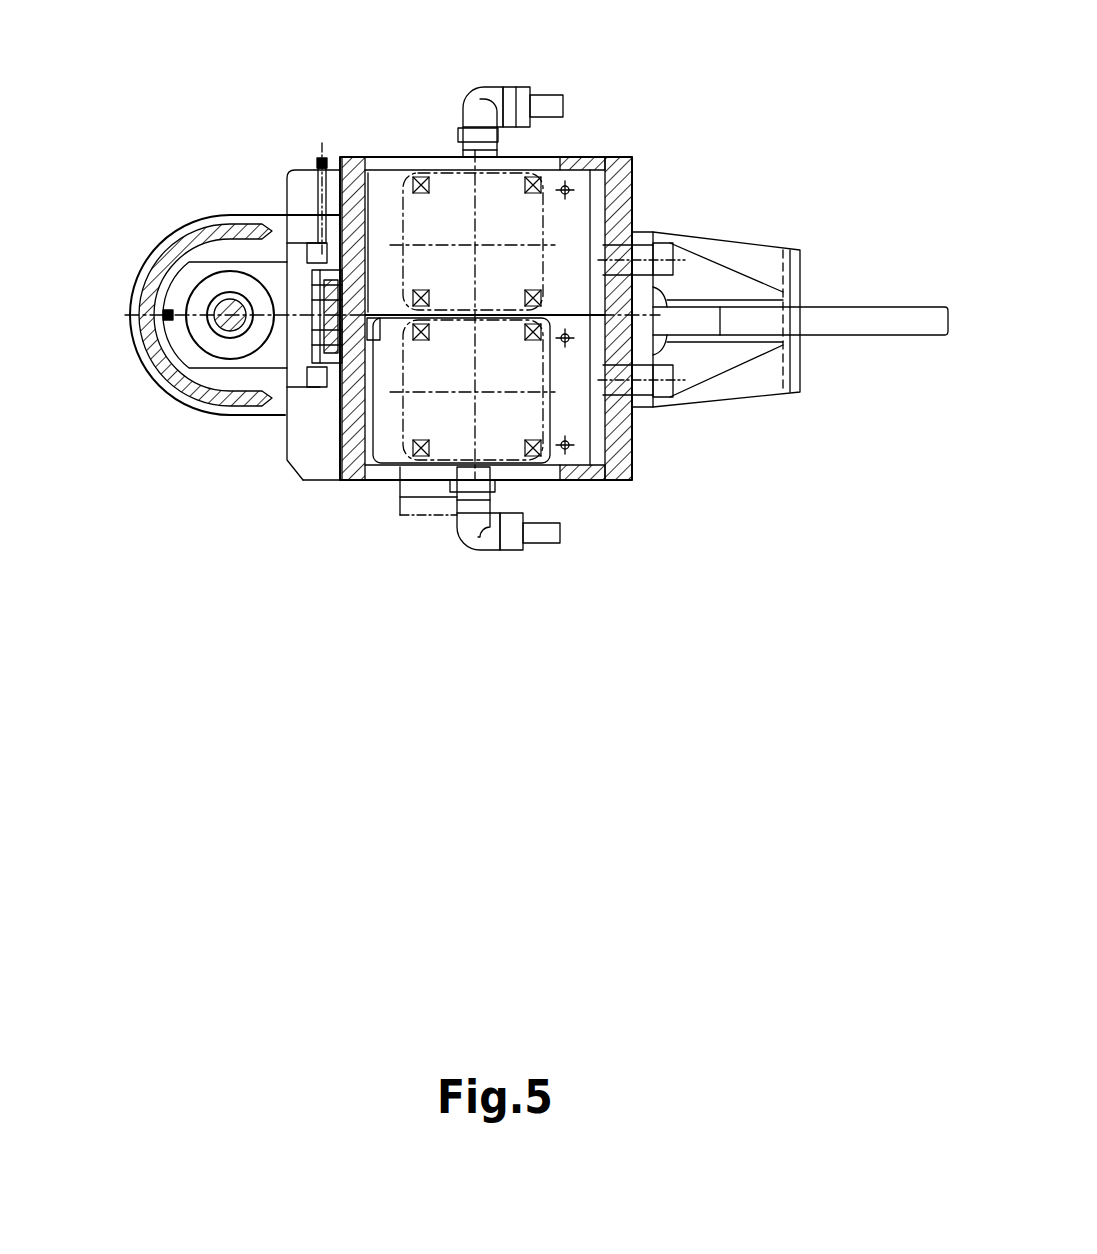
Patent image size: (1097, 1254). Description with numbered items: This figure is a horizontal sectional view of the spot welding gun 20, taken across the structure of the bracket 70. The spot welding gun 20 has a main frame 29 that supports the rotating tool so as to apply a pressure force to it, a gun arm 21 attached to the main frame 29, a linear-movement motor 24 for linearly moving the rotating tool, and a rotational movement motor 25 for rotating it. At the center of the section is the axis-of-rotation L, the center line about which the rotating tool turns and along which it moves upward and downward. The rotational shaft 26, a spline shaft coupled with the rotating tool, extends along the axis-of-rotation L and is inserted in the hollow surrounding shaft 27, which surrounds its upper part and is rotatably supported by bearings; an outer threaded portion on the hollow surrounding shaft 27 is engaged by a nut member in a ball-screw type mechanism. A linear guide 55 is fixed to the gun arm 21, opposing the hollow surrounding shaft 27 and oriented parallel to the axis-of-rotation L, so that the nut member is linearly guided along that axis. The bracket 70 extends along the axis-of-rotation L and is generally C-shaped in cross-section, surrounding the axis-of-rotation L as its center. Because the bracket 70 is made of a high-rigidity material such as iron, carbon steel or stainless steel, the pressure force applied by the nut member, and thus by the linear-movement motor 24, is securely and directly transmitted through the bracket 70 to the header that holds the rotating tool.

The spot welding gun 20 is at (722, 136).
The gun arm 21 is at (880, 312).
The linear-movement motor 24 is at (545, 225).
The rotational movement motor 25 is at (525, 480).
The rotational shaft 26 is at (241, 358).
The hollow surrounding shaft 27 is at (230, 293).
The main frame 29 is at (615, 207).
The linear guide 55 is at (313, 240).
The bracket 70 is at (172, 233).
The axis-of-rotation L is at (213, 311).